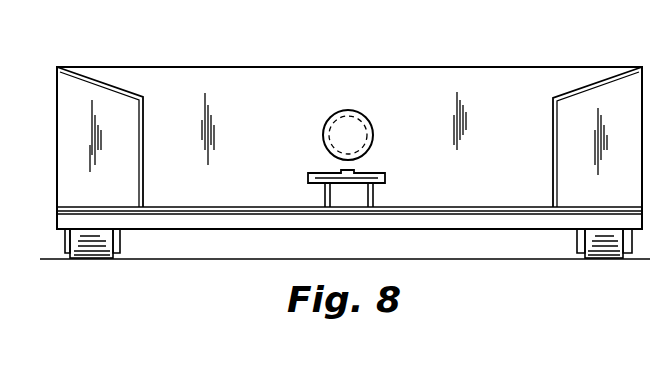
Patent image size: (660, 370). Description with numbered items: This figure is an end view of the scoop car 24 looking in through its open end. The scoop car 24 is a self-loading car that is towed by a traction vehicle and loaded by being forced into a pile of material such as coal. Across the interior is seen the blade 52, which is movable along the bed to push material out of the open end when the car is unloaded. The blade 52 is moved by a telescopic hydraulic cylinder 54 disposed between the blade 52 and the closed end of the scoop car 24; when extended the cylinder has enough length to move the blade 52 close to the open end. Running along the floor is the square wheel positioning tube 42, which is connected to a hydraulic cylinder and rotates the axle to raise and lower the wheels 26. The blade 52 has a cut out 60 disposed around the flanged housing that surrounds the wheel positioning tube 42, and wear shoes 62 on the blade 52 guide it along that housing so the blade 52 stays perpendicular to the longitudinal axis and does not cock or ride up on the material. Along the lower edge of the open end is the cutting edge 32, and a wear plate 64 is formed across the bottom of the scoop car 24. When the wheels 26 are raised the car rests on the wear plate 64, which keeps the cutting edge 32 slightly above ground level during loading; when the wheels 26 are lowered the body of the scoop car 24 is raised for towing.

The scoop car 24 is at (545, 68).
The blade 52 is at (427, 77).
The cutting edge 32 is at (500, 182).
The telescopic hydraulic cylinder 54 is at (369, 117).
The cut out 60 is at (372, 175).
The wheel positioning tube 42 is at (325, 190).
The wear shoes 62 is at (375, 190).
The wheels 26 is at (117, 245).
The wear plate 64 is at (519, 222).